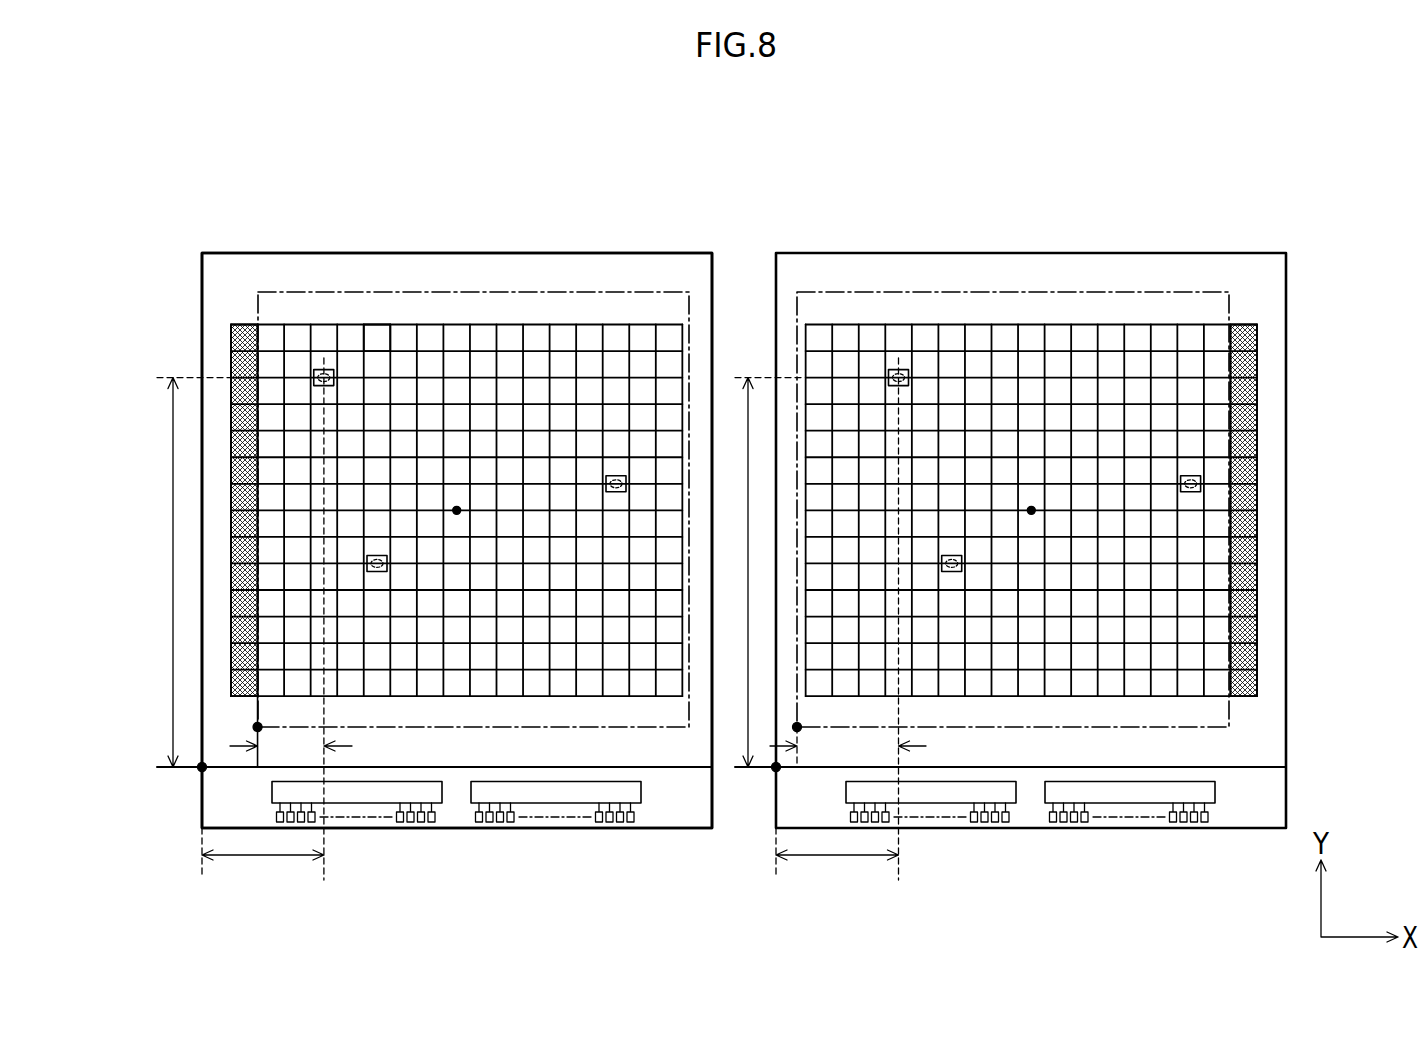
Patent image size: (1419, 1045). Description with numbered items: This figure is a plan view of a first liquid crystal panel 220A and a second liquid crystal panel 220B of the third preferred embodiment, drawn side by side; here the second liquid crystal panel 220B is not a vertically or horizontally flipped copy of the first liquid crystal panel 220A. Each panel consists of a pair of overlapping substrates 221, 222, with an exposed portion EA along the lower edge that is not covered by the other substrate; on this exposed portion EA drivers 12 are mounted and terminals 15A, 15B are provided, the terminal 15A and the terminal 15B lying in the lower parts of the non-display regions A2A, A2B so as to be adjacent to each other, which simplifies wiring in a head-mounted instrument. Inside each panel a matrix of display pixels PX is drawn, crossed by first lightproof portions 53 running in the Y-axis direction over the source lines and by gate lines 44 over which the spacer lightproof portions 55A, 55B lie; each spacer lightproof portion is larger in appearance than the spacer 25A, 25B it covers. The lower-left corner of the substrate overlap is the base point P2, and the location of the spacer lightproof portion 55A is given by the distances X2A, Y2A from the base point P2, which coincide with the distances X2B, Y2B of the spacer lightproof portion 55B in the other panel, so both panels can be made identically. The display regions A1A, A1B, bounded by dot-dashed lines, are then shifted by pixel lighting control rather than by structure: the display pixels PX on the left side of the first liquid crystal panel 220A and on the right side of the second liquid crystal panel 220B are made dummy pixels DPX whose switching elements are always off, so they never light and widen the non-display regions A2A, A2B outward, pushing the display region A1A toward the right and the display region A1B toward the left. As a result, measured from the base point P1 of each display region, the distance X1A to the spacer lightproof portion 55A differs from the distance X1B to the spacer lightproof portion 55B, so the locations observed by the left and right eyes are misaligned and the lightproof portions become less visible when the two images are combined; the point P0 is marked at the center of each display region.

The first liquid crystal panel 220A is at (475, 148).
The second liquid crystal panel 220B is at (1045, 140).
The display region of the first liquid crystal panel A1A is at (350, 312).
The display region of the second liquid crystal panel A1B is at (1173, 312).
The non-display region of the first liquid crystal panel A2A is at (287, 276).
The non-display region of the second liquid crystal panel A2B is at (1237, 276).
The display pixel PX is at (372, 345).
The dummy pixel DPX is at (232, 332).
The spacer lightproof portion of the first liquid crystal panel 55A is at (336, 377).
The spacer lightproof portion of the second liquid crystal panel 55B is at (1193, 478).
The spacer of the first liquid crystal panel 25A is at (347, 390).
The spacer of the second liquid crystal panel 25B is at (1193, 497).
The first lightproof portion 53 is at (578, 340).
The gate line 44 is at (641, 345).
The center point of display region P0 is at (744, 492).
The base point of the display region P1 is at (545, 713).
The base point of the substrates P2 is at (504, 784).
The Y-axis distance of spacer lightproof portion 55A from base point P2 Y2A is at (172, 572).
The Y-axis distance of spacer lightproof portion 55B from base point P2 Y2B is at (747, 572).
The X-axis distance of spacer lightproof portion 55A from base point P1 X1A is at (291, 746).
The X-axis distance of spacer lightproof portion 55B from base point P1 X1B is at (848, 746).
The X-axis distance of spacer lightproof portion 55A from base point P2 X2A is at (263, 874).
The X-axis distance of spacer lightproof portion 55B from base point P2 X2B is at (837, 873).
The driver 12 is at (441, 795).
The terminal of the first liquid crystal panel 15A is at (500, 814).
The terminal of the second liquid crystal panel 15B is at (1076, 818).
The substrate 221 is at (557, 745).
The substrate 222 is at (654, 815).
The exposed portion EA is at (683, 813).